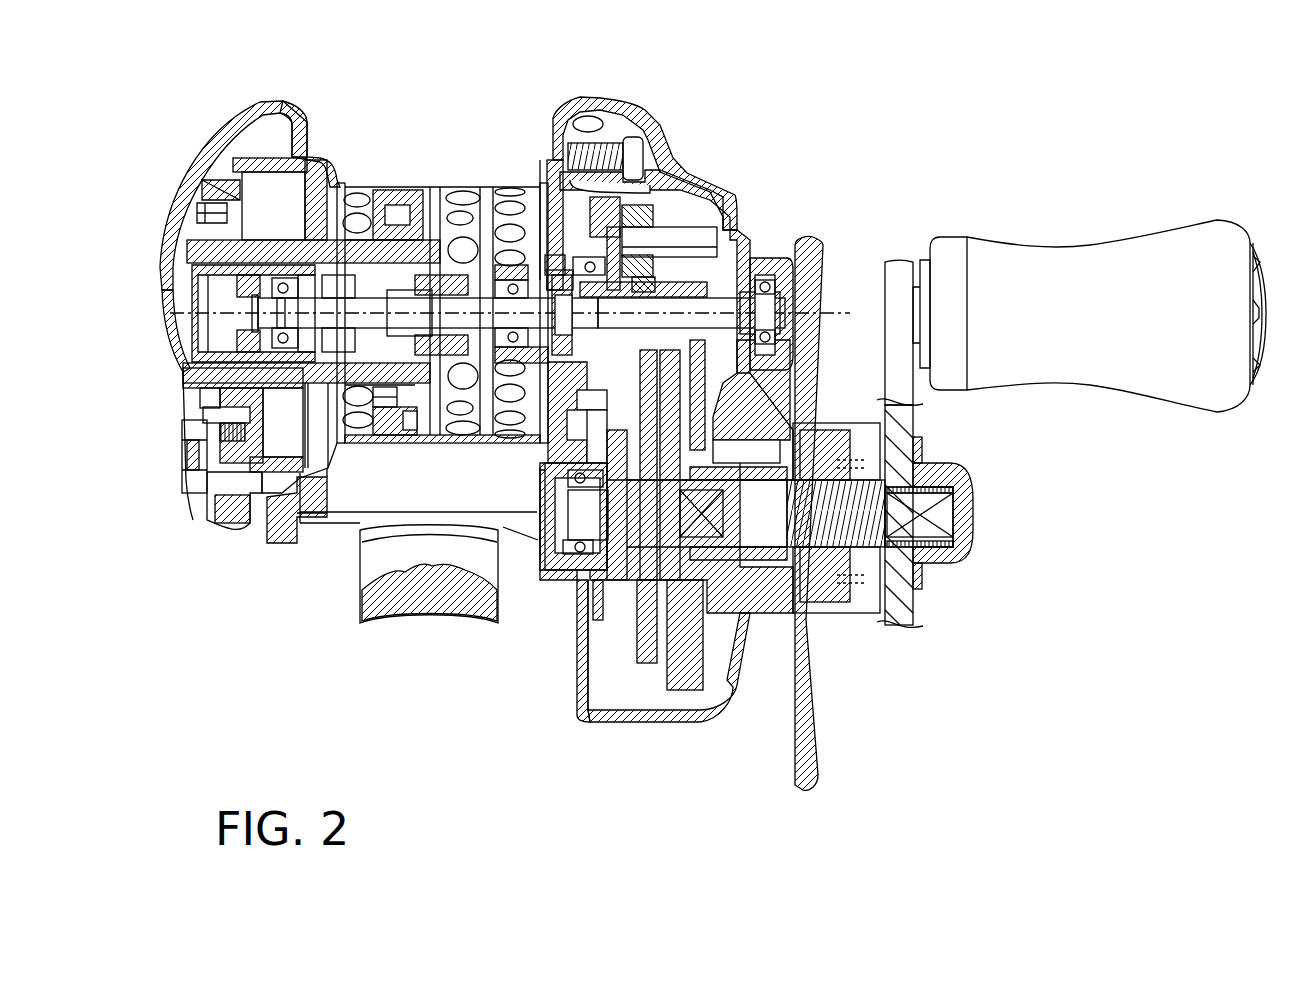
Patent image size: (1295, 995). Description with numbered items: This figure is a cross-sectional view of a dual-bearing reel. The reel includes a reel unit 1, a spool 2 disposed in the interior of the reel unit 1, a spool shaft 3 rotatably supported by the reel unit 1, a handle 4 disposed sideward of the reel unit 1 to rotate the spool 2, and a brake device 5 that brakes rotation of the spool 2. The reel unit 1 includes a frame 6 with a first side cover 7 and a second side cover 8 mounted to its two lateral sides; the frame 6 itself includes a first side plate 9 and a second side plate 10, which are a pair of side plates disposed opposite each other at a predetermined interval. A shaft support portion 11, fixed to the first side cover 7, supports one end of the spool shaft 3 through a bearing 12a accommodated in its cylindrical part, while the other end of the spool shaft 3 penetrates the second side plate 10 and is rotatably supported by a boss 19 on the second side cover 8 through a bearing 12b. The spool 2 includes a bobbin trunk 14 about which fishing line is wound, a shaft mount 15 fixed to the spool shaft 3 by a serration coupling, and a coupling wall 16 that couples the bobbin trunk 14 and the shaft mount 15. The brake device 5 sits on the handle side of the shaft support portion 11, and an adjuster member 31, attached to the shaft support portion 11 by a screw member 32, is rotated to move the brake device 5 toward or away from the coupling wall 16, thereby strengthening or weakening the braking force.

The reel unit 1 is at (760, 92).
The spool 2 is at (455, 178).
The spool shaft 3 is at (740, 240).
The handle 4 is at (1078, 240).
The brake device 5 is at (187, 383).
The frame 6 is at (305, 105).
The first side cover 7 is at (197, 150).
The second side cover 8 is at (645, 722).
The first side plate 9 is at (283, 543).
The second side plate 10 is at (578, 650).
The shaft support portion 11 is at (257, 155).
The bearing 12a is at (183, 340).
The bearing 12b is at (767, 268).
The bobbin trunk 14 is at (512, 178).
The shaft mount 15 is at (405, 185).
The coupling wall 16 is at (432, 190).
The boss 19 is at (782, 337).
The adjuster member 31 is at (197, 517).
The screw member 32 is at (182, 472).